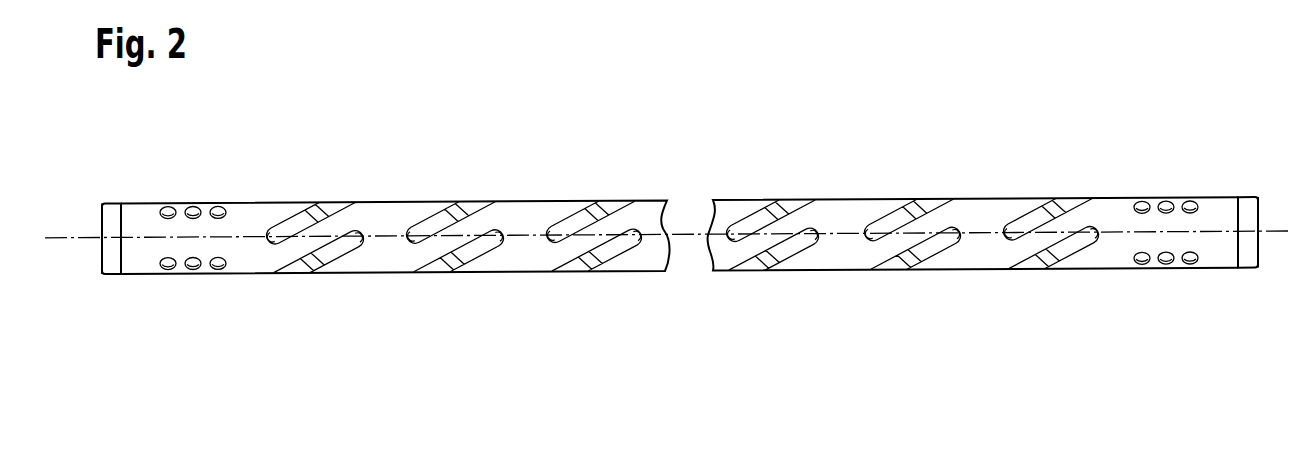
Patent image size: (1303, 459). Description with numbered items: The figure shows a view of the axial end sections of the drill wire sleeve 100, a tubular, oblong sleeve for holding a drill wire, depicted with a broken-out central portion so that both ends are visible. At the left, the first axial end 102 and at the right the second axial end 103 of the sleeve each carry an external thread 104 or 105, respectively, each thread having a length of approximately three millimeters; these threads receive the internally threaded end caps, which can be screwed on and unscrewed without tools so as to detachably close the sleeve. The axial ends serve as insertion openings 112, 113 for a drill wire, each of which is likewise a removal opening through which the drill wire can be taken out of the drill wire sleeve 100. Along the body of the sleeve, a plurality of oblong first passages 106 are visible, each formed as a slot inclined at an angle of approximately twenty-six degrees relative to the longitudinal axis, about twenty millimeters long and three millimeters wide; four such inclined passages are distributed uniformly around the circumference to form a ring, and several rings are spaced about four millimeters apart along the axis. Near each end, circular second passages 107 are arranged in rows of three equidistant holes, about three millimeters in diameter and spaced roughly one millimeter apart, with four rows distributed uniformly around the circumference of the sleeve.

The drill wire sleeve 100 is at (674, 213).
The first axial end 102 is at (1005, 218).
The second axial end 103 is at (362, 225).
The external thread 104 is at (1270, 236).
The external thread 105 is at (88, 242).
The first passages 106 is at (915, 256).
The second passages 107 is at (1190, 258).
The insertion opening 112 is at (1263, 214).
The insertion opening 113 is at (97, 222).